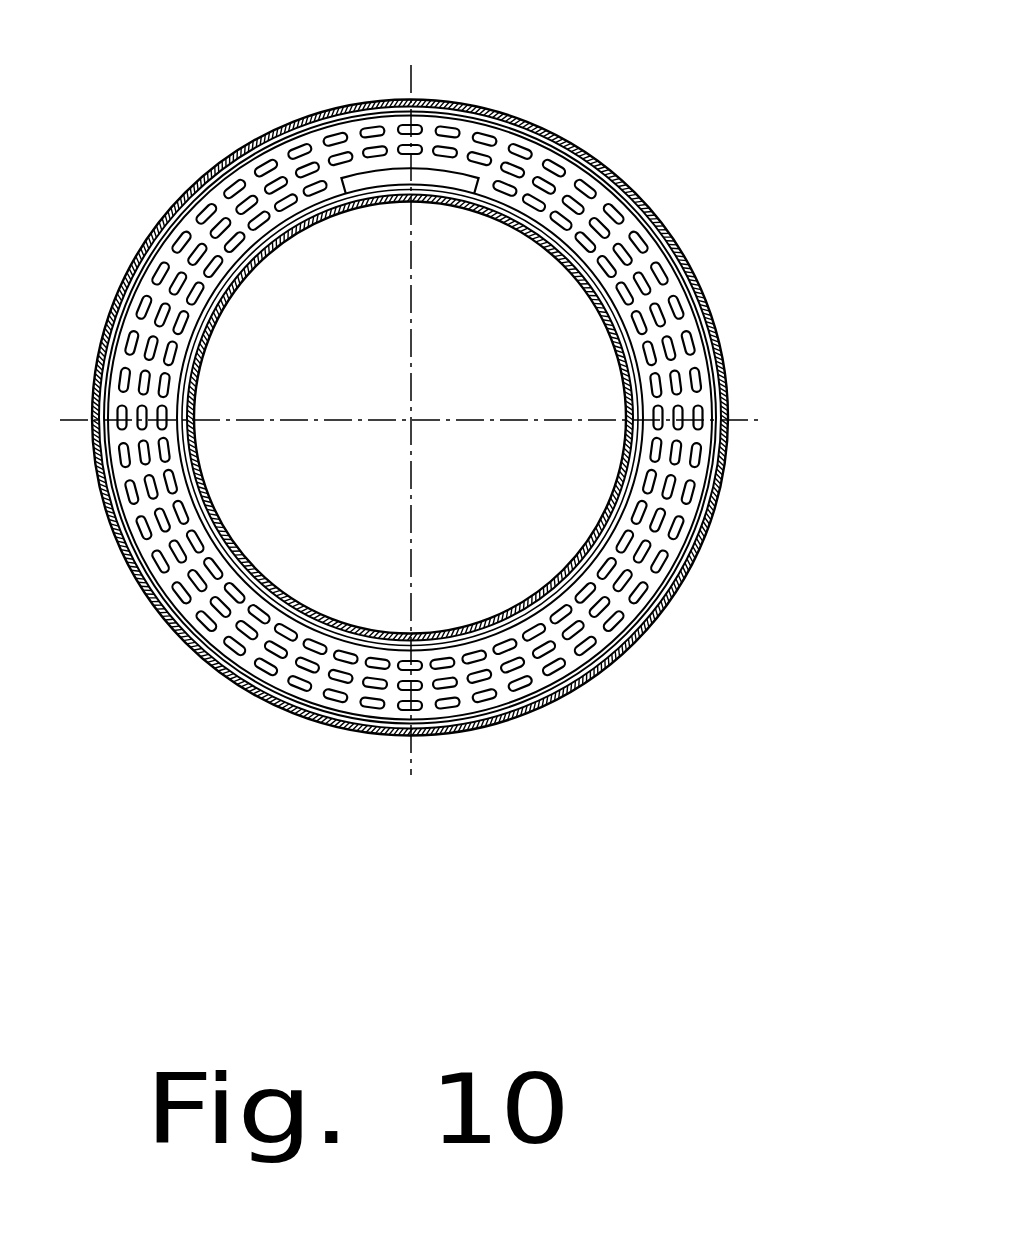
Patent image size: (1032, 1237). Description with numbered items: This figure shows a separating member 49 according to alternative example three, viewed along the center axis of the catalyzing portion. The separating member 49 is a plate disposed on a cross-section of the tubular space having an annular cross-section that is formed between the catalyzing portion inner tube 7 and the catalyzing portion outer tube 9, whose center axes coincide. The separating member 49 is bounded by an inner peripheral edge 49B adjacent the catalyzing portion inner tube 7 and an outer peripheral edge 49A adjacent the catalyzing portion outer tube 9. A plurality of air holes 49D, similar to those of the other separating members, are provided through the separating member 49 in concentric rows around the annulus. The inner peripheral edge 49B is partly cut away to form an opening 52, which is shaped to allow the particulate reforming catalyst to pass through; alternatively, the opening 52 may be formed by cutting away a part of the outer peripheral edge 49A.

The opening 52 is at (428, 176).
The air holes 49D is at (643, 247).
The separating member 49 is at (688, 325).
The catalyzing portion outer tube 9 is at (730, 435).
The catalyzing portion inner tube 7 is at (630, 497).
The inner peripheral edge 49B is at (585, 577).
The outer peripheral edge 49A is at (424, 470).